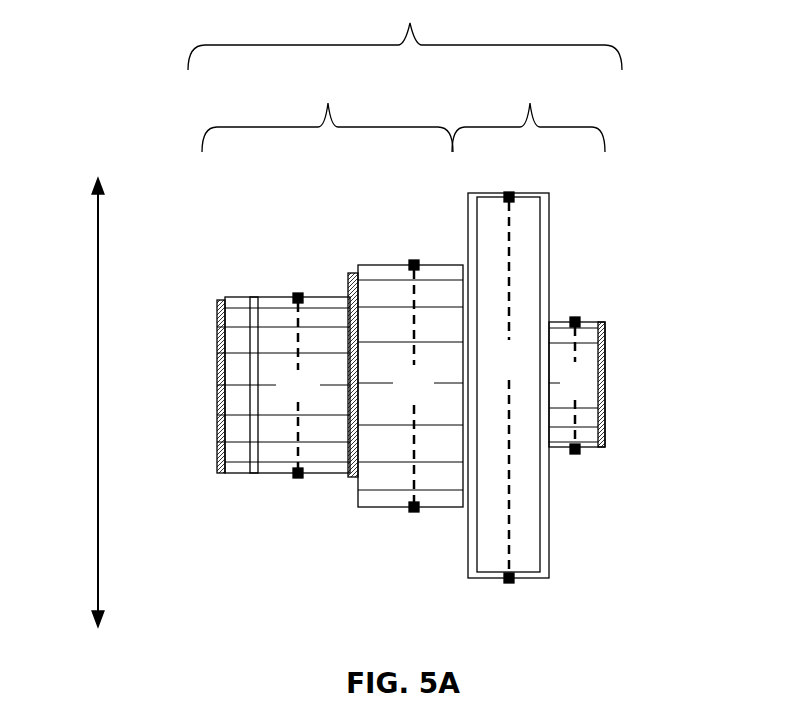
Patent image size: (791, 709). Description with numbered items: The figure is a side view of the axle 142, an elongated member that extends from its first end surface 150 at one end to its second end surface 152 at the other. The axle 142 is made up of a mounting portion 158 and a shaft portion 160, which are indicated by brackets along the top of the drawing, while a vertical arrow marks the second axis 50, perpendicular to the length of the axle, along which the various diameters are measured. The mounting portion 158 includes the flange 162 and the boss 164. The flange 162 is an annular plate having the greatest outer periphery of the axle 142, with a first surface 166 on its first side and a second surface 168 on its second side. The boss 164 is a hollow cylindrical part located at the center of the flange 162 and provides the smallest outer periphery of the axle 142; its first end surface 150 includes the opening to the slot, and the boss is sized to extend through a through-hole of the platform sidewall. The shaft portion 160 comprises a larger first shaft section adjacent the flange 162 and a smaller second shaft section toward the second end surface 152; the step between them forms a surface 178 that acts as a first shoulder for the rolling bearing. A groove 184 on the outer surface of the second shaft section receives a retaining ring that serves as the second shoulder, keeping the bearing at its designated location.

The axle 142 is at (405, 35).
The shaft portion 160 is at (327, 115).
The mounting portion 158 is at (528, 117).
The second axis 50 is at (98, 388).
The second end surface 152 is at (217, 325).
The groove 184 is at (253, 307).
The surface 178 is at (352, 282).
The second surface 168 is at (467, 232).
The first surface 166 is at (552, 248).
The flange 162 is at (528, 208).
The first end surface 150 is at (605, 348).
The boss 164 is at (593, 445).